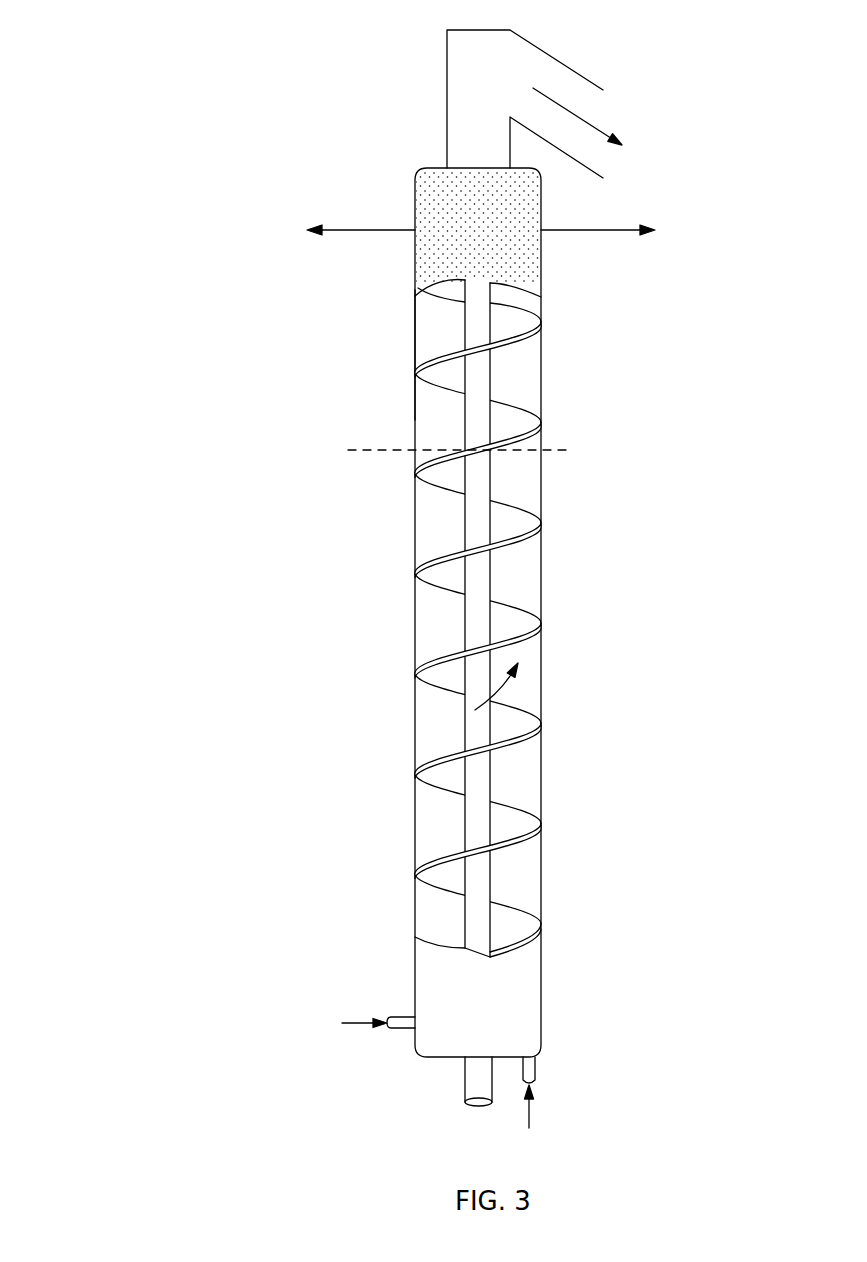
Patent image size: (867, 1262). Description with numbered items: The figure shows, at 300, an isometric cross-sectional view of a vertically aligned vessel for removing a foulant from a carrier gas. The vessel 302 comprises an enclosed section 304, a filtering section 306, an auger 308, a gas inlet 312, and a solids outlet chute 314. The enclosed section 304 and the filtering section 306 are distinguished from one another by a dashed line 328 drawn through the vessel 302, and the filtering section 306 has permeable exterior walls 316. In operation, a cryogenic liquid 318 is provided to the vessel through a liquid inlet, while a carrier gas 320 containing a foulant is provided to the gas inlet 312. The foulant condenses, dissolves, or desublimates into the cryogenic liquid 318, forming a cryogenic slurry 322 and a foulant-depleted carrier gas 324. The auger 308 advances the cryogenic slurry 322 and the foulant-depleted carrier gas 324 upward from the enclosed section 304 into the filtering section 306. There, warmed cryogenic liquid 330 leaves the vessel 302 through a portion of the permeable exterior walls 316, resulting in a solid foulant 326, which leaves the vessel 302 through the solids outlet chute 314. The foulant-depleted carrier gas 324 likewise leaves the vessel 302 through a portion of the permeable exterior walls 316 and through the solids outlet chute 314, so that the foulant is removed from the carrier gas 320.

The vertically aligned vessel view 300 is at (158, 58).
The vessel 302 is at (433, 1058).
The enclosed section 304 is at (415, 610).
The filtering section 306 is at (415, 335).
The auger 308 is at (464, 618).
The gas inlet 312 is at (404, 1012).
The solids outlet chute 314 is at (458, 128).
The permeable exterior walls 316 is at (525, 257).
The cryogenic liquid 318 is at (339, 1021).
The carrier gas 320 is at (532, 1124).
The cryogenic slurry 322 is at (468, 699).
The foulant-depleted carrier gas 324 is at (332, 238).
The solid foulant 326 is at (610, 133).
The dashed line 328 is at (431, 449).
The warmed cryogenic liquid 330 is at (629, 233).